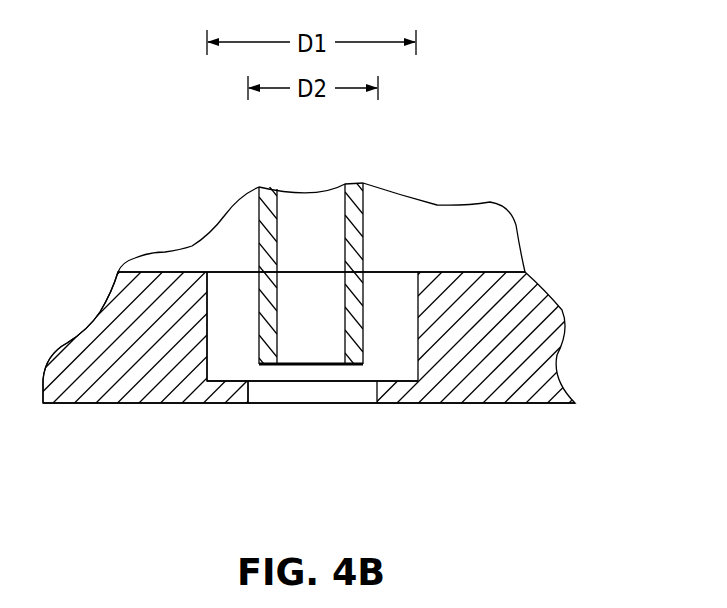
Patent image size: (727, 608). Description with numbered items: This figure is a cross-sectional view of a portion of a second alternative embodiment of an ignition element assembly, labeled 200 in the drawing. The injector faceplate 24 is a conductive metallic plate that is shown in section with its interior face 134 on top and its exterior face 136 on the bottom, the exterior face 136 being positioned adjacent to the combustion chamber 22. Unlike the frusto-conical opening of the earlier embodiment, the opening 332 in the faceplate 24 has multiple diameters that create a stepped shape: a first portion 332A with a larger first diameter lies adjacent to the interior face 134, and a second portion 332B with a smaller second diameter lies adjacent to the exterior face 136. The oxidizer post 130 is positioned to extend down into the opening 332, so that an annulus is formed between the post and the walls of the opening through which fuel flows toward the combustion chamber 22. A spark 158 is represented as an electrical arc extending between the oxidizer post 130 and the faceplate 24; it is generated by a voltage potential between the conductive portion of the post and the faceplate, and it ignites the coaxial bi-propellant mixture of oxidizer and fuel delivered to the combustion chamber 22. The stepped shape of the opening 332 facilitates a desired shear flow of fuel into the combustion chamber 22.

The combustion chamber 22 is at (383, 440).
The injector faceplate 24 is at (92, 380).
The oxidizer post 130 is at (268, 188).
The interior face 134 is at (487, 272).
The exterior face 136 is at (487, 404).
The spark 158 is at (250, 374).
The assembly 200 is at (536, 89).
The opening 332 is at (394, 270).
The first portion 332A is at (205, 286).
The second portion 332B is at (247, 392).